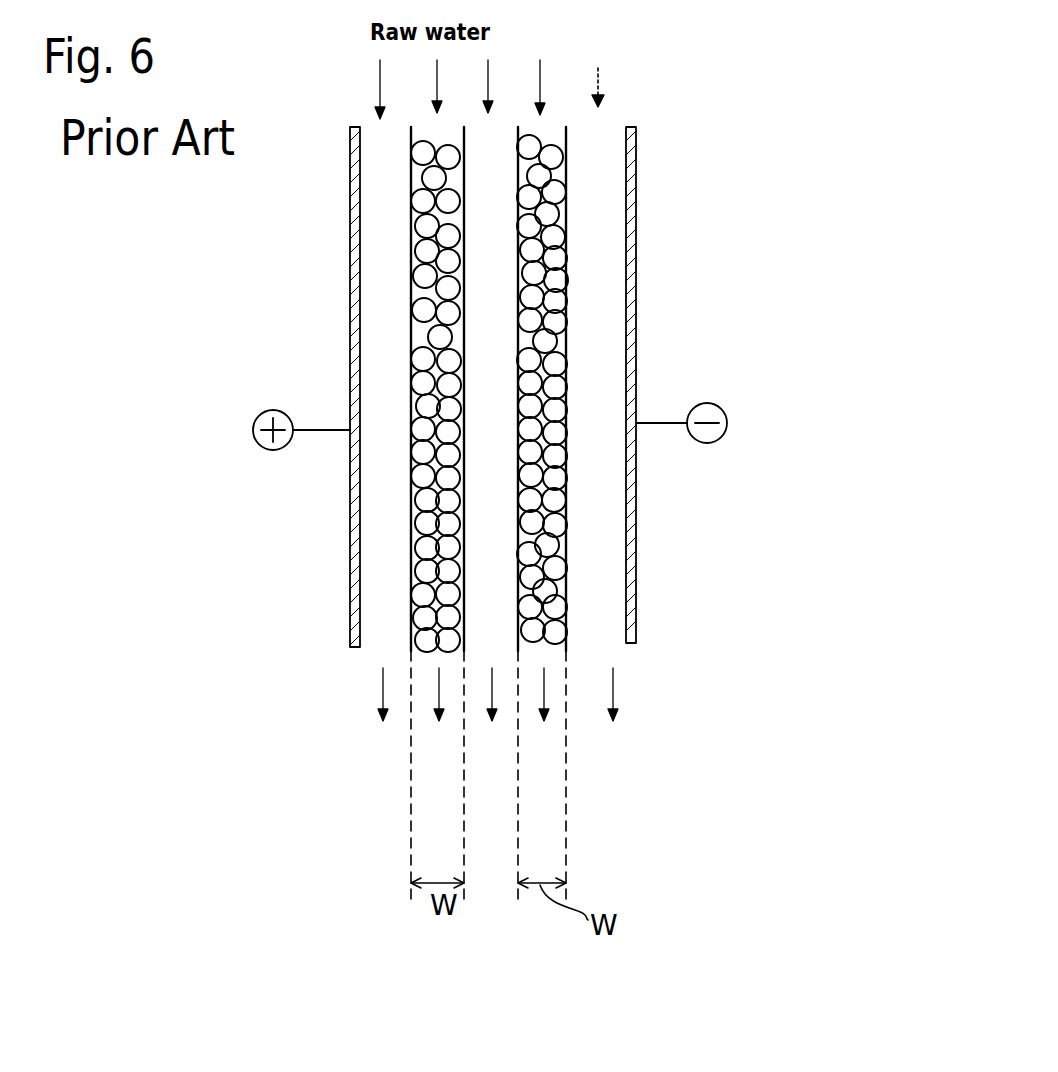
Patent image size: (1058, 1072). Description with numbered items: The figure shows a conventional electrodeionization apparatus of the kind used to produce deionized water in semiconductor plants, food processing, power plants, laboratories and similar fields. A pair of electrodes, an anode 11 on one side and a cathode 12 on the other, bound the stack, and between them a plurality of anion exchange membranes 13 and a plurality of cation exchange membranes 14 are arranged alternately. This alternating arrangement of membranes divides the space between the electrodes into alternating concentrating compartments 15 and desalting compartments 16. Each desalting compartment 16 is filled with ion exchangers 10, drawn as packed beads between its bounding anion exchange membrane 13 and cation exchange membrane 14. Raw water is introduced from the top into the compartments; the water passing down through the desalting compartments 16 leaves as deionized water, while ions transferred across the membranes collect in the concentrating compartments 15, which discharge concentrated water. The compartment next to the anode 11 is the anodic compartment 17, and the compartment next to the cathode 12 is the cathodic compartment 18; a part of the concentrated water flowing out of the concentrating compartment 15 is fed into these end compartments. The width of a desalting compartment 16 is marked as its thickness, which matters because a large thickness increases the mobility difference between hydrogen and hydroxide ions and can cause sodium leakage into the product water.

The ion exchanger 10 is at (540, 174).
The anode 11 is at (350, 478).
The cathode 12 is at (637, 505).
The anion exchange membrane 13 is at (517, 127).
The cation exchange membrane 14 is at (566, 127).
The concentrating compartment 15 is at (488, 303).
The desalting compartment 16 is at (558, 338).
The anodic compartment 17 is at (373, 612).
The cathodic compartment 18 is at (597, 597).